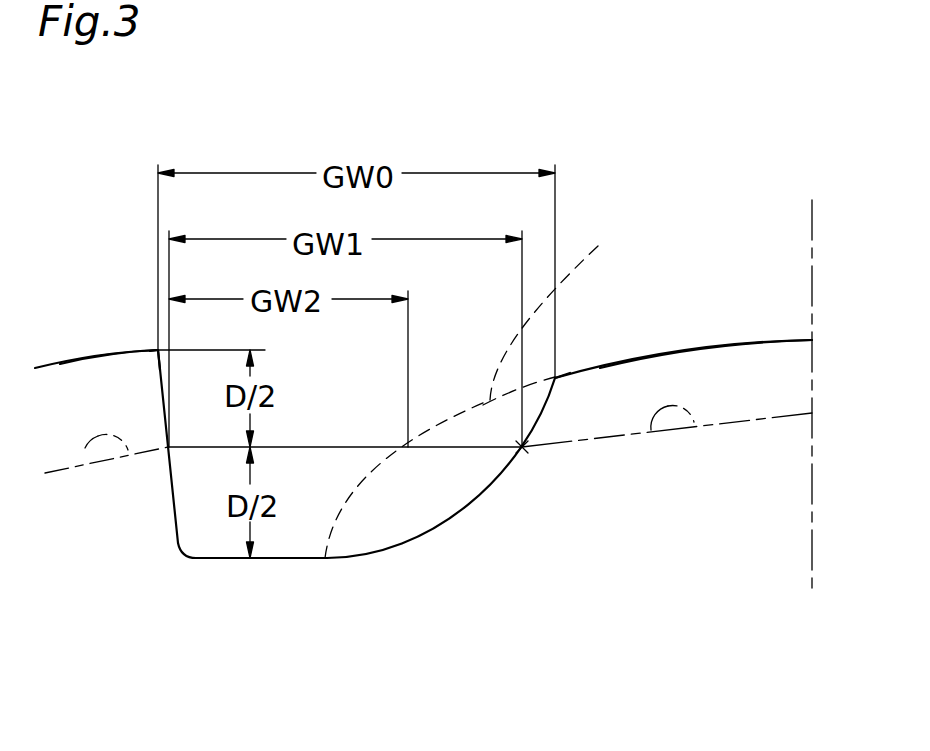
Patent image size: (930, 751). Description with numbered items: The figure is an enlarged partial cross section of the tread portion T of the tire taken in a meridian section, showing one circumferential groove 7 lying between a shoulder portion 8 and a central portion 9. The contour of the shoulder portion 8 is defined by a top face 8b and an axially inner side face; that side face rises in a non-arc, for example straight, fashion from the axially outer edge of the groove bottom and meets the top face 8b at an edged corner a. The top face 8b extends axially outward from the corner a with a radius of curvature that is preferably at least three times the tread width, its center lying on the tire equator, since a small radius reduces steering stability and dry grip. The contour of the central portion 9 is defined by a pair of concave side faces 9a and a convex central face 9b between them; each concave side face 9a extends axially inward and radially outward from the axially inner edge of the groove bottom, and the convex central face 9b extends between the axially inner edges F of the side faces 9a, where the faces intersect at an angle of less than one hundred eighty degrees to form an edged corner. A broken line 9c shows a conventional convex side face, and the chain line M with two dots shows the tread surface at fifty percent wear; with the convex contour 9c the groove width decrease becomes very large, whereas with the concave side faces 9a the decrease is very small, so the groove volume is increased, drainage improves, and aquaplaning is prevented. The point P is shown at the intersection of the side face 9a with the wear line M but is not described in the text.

The circumferential groove 7 is at (312, 501).
The shoulder portion 8 is at (80, 360).
The top face 8b is at (113, 353).
The central portion 9 is at (667, 228).
The concave side face 9a is at (493, 480).
The convex central face 9b is at (725, 341).
The broken line 9c is at (554, 302).
The edged corner a is at (157, 351).
The tread portion T is at (582, 191).
The axially inner edge F is at (557, 377).
The reference point P is at (523, 448).
The chain line with two dots M is at (85, 448).